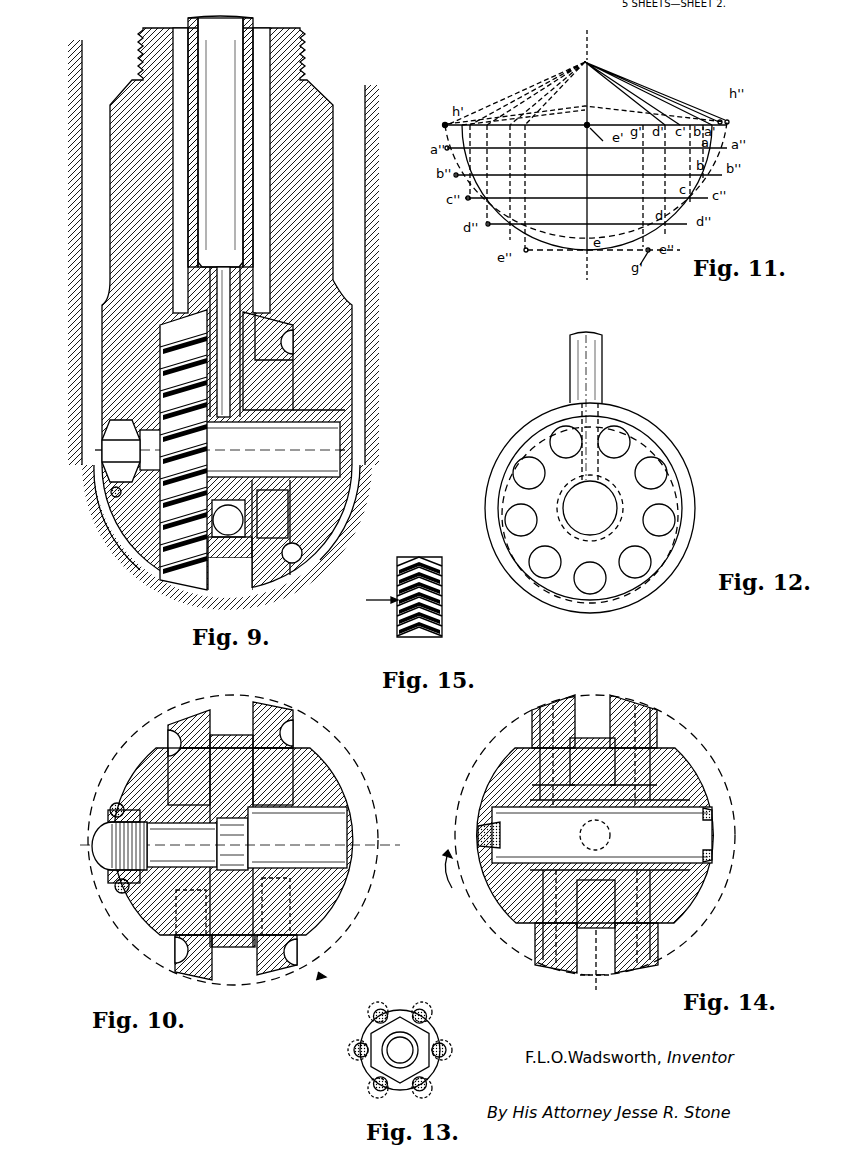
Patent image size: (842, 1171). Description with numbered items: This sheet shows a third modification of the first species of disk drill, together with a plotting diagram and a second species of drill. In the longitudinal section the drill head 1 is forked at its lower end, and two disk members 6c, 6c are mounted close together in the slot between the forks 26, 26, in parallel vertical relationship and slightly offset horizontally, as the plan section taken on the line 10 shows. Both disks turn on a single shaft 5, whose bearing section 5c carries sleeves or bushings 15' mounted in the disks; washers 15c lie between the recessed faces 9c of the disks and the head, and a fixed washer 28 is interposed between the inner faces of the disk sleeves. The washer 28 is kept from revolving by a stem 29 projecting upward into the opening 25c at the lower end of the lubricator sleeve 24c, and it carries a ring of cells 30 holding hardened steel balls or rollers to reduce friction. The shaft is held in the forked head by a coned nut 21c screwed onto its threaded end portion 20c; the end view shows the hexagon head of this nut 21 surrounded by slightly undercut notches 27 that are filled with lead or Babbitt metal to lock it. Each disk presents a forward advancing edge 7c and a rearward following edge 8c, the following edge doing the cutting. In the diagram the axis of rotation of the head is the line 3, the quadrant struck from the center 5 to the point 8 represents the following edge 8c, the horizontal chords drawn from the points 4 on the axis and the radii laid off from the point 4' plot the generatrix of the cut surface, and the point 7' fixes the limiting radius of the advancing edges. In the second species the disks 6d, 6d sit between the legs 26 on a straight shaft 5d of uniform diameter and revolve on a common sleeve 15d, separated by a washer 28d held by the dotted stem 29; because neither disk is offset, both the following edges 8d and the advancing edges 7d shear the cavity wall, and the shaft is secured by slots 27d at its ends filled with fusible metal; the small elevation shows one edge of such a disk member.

In FIG. 9, the drill head 1 is at (316, 98).
In FIG. 11, the longitudinal axis of rotation 3 is at (581, 153).
In FIG. 11, the horizontal chord points 4 is at (587, 192).
In FIG. 11, the plotting point 4' is at (586, 85).
In FIG. 11, the shaft 5 is at (597, 115).
In FIG. 9, the shaft bearing 5c is at (105, 543).
In FIG. 10, the shaft bearing 5c is at (340, 828).
In FIG. 14, the shaft member 5d is at (602, 835).
In FIG. 9, the disk member 6c is at (178, 583).
In FIG. 10, the disk member 6c is at (185, 712).
In FIG. 14, the disk member 6d is at (566, 700).
In FIG. 11, the limiting point 7' is at (586, 106).
In FIG. 10, the forward advancing edge 7c is at (230, 705).
In FIG. 14, the advancing edge 7d is at (585, 700).
In FIG. 11, the rearward following edge 8 is at (586, 177).
In FIG. 10, the rearward following edge 8c is at (292, 714).
In FIG. 14, the following edge 8d is at (658, 713).
In FIG. 9, the recessed face 9c is at (300, 558).
In FIG. 10, the recessed face 9c is at (296, 733).
In FIG. 9, the section line 10 is at (100, 450).
In FIG. 9, the washer 15c is at (292, 380).
In FIG. 10, the washer 15c is at (150, 748).
In FIG. 14, the common sleeve 15d is at (533, 745).
In FIG. 9, the disk sleeve 15' is at (346, 391).
In FIG. 10, the threaded end portion 20c is at (105, 848).
In FIG. 13, the threaded end portion 20c is at (410, 1044).
In FIG. 13, the coned nut 21 is at (380, 1040).
In FIG. 9, the coned nut 21c is at (100, 464).
In FIG. 10, the coned nut 21c is at (108, 880).
In FIG. 9, the lubricator sleeve 24c is at (200, 160).
In FIG. 9, the opening 25c is at (230, 264).
In FIG. 9, the forks 26 is at (102, 336).
In FIG. 10, the forks 26 is at (125, 765).
In FIG. 14, the forks 26 is at (497, 765).
In FIG. 9, the undercut notches 27 is at (112, 495).
In FIG. 10, the undercut notches 27 is at (112, 803).
In FIG. 13, the undercut notches 27 is at (377, 1006).
In FIG. 14, the slots 27d is at (712, 812).
In FIG. 9, the fixed washer 28 is at (230, 559).
In FIG. 12, the fixed washer 28 is at (668, 446).
In FIG. 10, the fixed washer 28 is at (240, 950).
In FIG. 14, the washer 28d is at (596, 968).
In FIG. 9, the stem portion 29 is at (242, 292).
In FIG. 12, the stem portion 29 is at (603, 370).
In FIG. 9, the cells 30 is at (288, 508).
In FIG. 12, the cells 30 is at (555, 437).